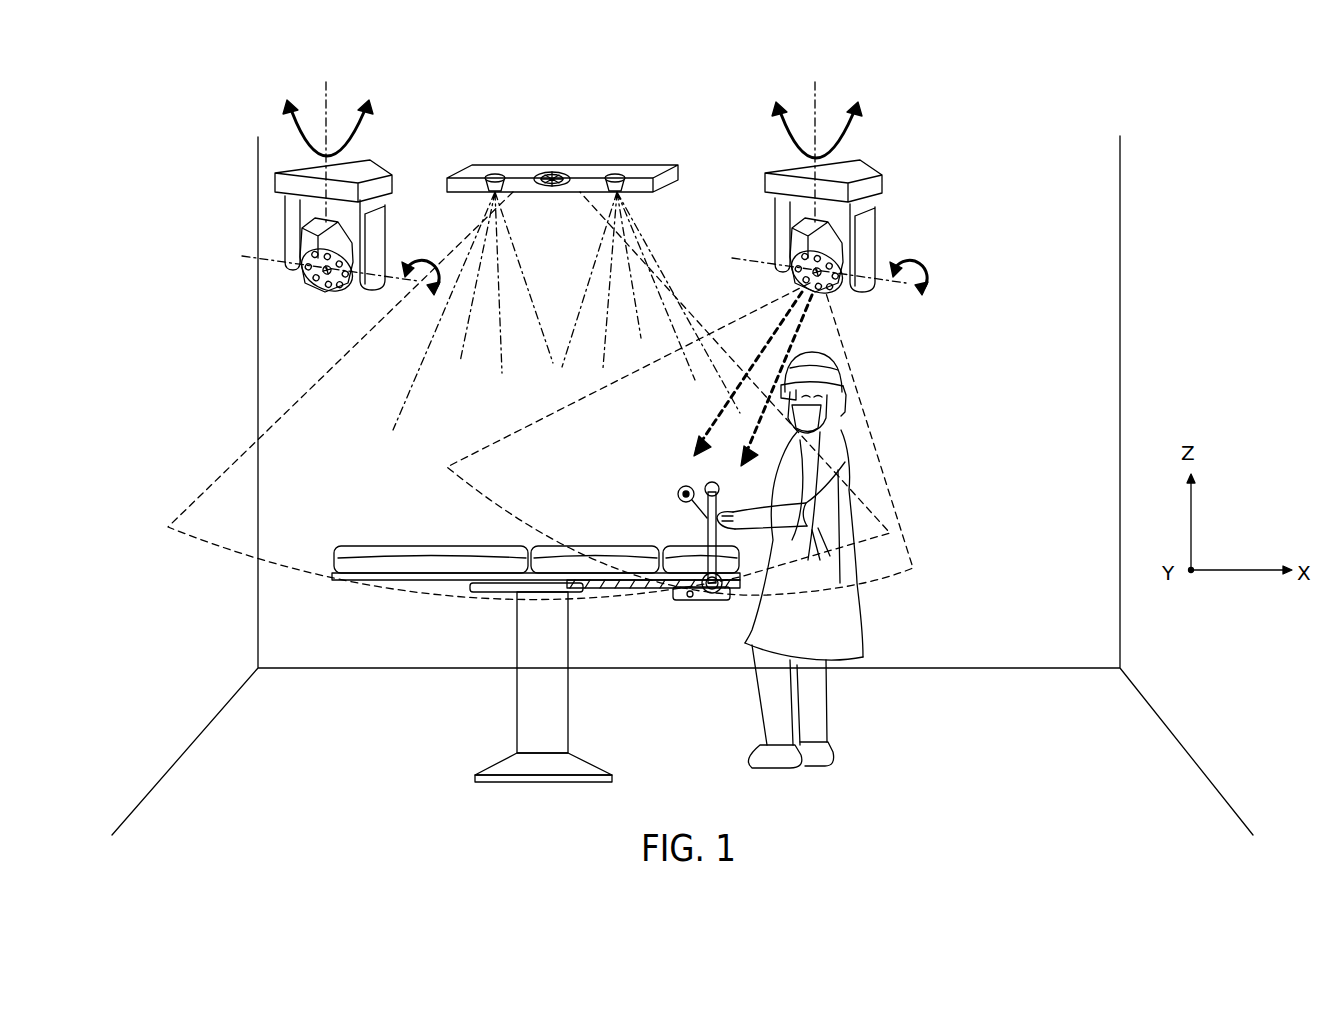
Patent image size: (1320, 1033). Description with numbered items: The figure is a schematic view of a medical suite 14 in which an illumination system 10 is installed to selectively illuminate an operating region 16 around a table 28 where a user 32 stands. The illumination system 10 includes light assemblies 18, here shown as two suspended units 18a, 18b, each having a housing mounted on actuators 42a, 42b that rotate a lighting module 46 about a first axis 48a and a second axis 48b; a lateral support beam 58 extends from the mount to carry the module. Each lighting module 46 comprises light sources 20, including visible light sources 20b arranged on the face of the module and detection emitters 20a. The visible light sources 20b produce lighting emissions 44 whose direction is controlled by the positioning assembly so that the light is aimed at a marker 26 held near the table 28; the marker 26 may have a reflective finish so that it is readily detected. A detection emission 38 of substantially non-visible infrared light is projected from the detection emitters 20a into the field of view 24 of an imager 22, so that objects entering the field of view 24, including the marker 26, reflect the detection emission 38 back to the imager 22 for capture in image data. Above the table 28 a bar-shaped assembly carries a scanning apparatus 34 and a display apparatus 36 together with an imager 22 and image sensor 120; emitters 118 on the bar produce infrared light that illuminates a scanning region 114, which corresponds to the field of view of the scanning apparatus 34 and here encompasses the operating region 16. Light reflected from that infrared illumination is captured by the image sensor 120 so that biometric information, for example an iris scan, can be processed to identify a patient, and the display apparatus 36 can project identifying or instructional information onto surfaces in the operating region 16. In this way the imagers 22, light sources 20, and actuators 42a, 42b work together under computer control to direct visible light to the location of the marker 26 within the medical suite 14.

The illumination system 10 is at (110, 100).
The medical suite 14 is at (558, 466).
The operating region 16 is at (511, 612).
The scanning region 114 is at (511, 612).
The light assembly 18 is at (572, 268).
The first camera unit 18a is at (285, 236).
The second camera unit 18b is at (903, 196).
The lighting module 46 is at (570, 300).
The light source 20 is at (574, 144).
The detection emitter 20a is at (574, 144).
The visible light source 20b is at (326, 282).
The imager 22 is at (674, 161).
The image sensor 120 is at (574, 116).
The field of view 24 is at (232, 462).
The marker 26 is at (682, 488).
The table 28 is at (478, 582).
The user 32 is at (829, 554).
The scanning apparatus 34 is at (503, 117).
The display apparatus 36 is at (548, 172).
The detection emission 38 is at (580, 300).
The actuator 42a is at (308, 167).
The actuator 42b is at (295, 265).
The lighting emission 44 is at (795, 353).
The first axis 48a is at (326, 103).
The second axis 48b is at (255, 266).
The lateral support beam 58 is at (388, 203).
The emitter 118 is at (512, 152).